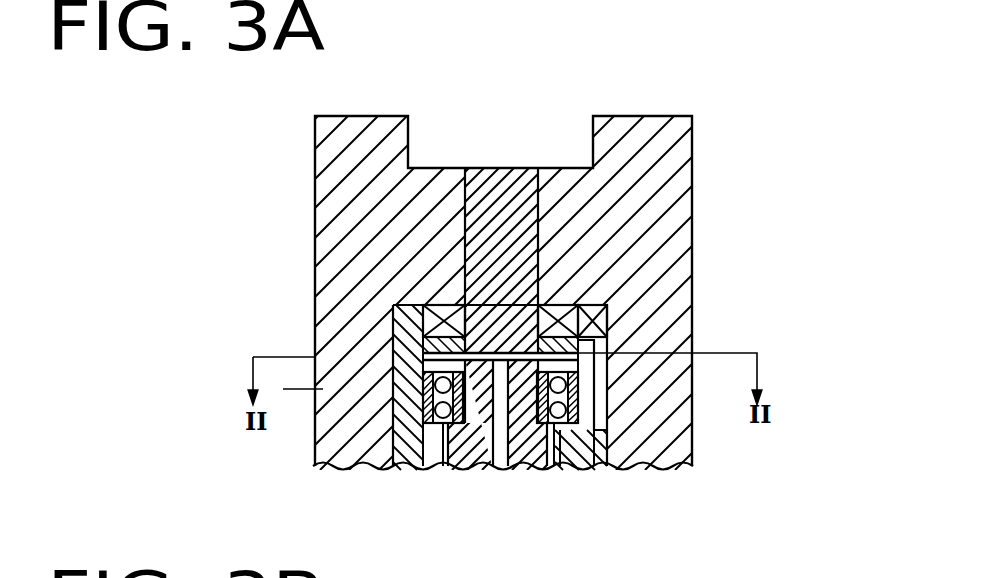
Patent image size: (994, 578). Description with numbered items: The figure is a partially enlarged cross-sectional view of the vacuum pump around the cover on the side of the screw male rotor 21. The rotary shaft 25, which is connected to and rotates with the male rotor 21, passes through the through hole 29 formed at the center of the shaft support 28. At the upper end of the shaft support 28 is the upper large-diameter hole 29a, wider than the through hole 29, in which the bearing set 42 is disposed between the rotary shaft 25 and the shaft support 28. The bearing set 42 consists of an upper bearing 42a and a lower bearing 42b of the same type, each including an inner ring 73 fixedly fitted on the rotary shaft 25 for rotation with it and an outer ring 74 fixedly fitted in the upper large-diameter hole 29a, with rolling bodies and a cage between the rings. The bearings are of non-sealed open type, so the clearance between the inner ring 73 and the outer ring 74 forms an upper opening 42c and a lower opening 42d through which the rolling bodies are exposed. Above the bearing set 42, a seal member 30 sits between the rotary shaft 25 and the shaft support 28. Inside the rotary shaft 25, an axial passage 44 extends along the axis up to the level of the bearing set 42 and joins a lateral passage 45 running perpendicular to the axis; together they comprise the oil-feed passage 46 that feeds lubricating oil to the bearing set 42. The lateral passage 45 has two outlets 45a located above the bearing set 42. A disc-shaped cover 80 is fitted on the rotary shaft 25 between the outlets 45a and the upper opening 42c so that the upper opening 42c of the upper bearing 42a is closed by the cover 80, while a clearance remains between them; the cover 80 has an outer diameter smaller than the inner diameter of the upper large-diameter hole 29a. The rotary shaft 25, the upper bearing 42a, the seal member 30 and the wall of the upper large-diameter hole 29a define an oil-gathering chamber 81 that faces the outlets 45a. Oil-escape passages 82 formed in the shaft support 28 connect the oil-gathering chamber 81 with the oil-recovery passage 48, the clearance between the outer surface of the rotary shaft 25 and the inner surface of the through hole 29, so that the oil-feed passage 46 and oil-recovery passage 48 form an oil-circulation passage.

The screw male rotor 21 is at (673, 165).
The rotary shaft 25 is at (511, 186).
The shaft support 28 is at (405, 470).
The through hole 29 is at (445, 468).
The upper large-diameter hole 29a is at (430, 350).
The seal member 30 is at (440, 306).
The bearing set 42 is at (222, 452).
The upper bearing 42a is at (425, 428).
The lower bearing 42b is at (442, 425).
The upper opening 42c is at (450, 371).
The lower opening 42d is at (430, 445).
The axial passage 44 is at (499, 456).
The lateral passage 45 is at (420, 340).
The outlets 45a is at (422, 337).
The oil-feed passage 46 is at (505, 469).
The oil-recovery passage 48 is at (556, 465).
The inner ring 73 is at (600, 452).
The outer ring 74 is at (588, 397).
The cover 80 is at (606, 326).
The oil-gathering chamber 81 is at (612, 301).
The oil-escape passages 82 is at (603, 432).